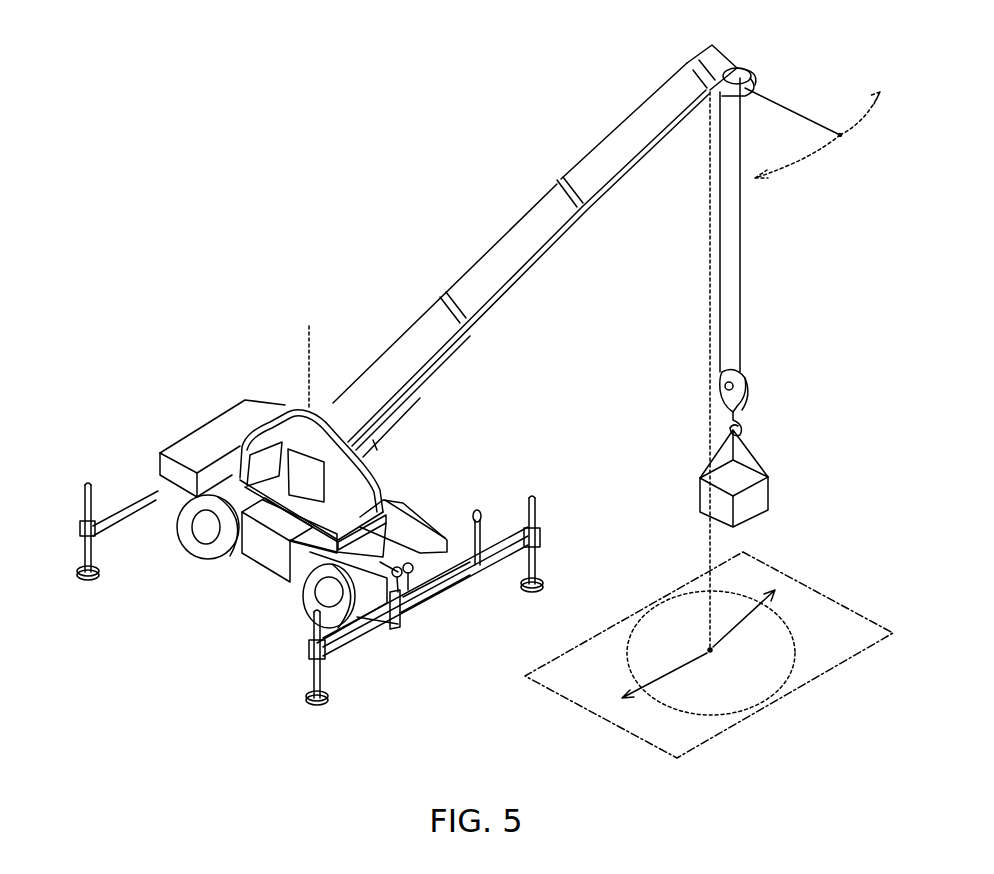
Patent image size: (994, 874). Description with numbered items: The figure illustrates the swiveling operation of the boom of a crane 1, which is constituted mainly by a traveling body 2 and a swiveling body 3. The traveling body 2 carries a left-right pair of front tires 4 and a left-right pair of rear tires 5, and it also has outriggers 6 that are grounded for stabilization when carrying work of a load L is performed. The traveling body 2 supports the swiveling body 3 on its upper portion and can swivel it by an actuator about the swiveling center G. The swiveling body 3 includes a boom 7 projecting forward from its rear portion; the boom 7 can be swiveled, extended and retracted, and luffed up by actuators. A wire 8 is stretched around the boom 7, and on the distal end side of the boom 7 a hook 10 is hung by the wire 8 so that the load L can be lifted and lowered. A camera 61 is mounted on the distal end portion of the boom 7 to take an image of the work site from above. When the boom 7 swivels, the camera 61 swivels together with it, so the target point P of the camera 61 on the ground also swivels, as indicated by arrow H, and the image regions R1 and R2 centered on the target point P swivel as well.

The crane 1 is at (230, 303).
The traveling body 2 is at (147, 448).
The swiveling body 3 is at (213, 430).
The front tires 4 is at (307, 610).
The rear tires 5 is at (185, 535).
The outriggers 6 is at (78, 567).
The boom 7 is at (483, 257).
The wire 8 is at (740, 230).
The hook 10 is at (737, 428).
The camera 61 is at (723, 107).
The swiveling center G is at (308, 354).
The arrow indicating swiveling of target point H is at (711, 658).
The load L is at (753, 517).
The target point P is at (712, 656).
The image region R1 is at (527, 680).
The image region R2 is at (630, 663).